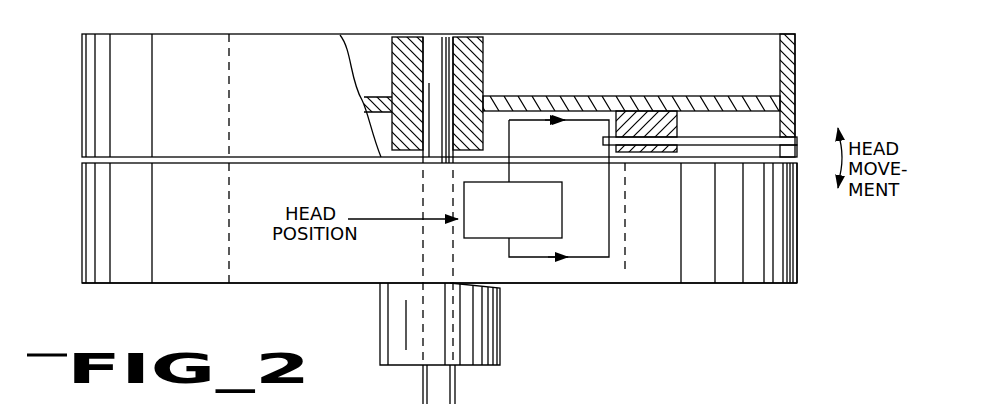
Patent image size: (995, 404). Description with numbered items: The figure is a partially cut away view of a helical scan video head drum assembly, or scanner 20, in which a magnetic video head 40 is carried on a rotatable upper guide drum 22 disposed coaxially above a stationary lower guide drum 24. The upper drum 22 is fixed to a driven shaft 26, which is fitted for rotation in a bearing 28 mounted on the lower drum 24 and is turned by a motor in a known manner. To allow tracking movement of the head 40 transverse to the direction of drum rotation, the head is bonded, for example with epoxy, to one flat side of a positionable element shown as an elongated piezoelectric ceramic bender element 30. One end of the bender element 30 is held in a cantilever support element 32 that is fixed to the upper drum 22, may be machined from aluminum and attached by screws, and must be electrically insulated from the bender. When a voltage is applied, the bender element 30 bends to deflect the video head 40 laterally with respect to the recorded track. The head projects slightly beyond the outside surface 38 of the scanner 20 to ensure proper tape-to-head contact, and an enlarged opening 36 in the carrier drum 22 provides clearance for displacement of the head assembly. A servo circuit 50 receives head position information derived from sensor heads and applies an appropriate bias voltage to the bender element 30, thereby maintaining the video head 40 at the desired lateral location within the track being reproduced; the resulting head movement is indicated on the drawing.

The scanner 20 is at (147, 303).
The upper guide drum 22 is at (82, 93).
The lower guide drum 24 is at (82, 215).
The driven shaft 26 is at (445, 388).
The bearing 28 is at (392, 312).
The piezoelectric bender element 30 is at (742, 139).
The cantilever support element 32 is at (680, 127).
The enlarged opening 36 is at (808, 168).
The outside surface 38 is at (797, 53).
The magnetic video head 40 is at (797, 143).
The servo circuit 50 is at (562, 208).